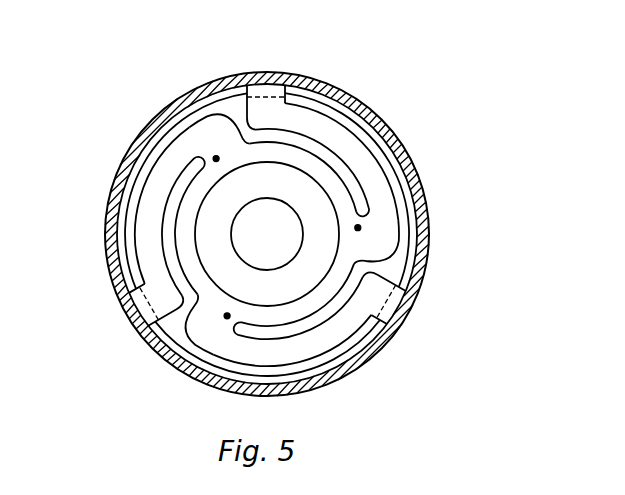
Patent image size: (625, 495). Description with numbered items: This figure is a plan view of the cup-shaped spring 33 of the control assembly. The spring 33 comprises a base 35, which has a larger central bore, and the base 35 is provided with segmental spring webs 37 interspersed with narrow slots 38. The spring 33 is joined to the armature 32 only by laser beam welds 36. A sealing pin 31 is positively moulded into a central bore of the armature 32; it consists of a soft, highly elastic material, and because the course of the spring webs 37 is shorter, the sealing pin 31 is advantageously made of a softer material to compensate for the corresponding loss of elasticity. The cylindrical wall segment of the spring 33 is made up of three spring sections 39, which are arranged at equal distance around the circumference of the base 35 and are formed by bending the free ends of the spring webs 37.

The sealing pin 31 is at (288, 229).
The armature 32 is at (237, 122).
The spring 33 is at (422, 272).
The base 35 is at (384, 262).
The laser beam welds 36 is at (214, 156).
The spring webs 37 is at (333, 182).
The slots 38 is at (303, 140).
The spring sections 39 is at (273, 95).